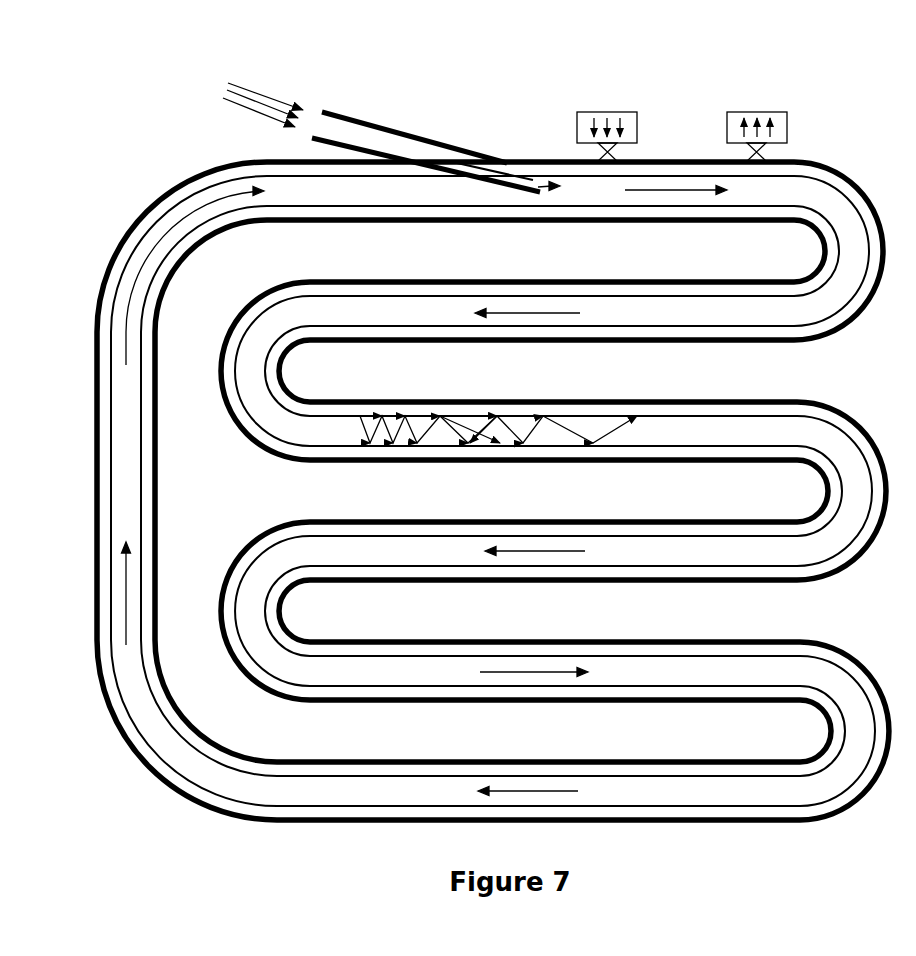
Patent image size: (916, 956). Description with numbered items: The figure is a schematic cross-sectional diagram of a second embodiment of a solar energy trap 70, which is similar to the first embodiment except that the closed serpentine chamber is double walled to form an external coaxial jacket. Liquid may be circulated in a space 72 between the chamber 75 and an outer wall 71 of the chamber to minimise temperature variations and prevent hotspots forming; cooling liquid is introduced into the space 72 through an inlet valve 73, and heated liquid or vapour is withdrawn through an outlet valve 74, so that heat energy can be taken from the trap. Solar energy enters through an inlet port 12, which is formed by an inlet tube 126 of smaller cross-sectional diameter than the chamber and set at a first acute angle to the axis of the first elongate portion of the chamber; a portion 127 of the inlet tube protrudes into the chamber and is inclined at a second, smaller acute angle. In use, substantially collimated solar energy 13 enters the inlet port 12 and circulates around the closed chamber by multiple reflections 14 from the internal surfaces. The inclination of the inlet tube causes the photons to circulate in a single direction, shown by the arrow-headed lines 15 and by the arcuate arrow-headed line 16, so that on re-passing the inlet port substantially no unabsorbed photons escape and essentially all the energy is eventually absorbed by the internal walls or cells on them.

The trap 70 is at (452, 441).
The outer wall 71 is at (92, 407).
The space 72 is at (148, 514).
The chamber 75 is at (118, 498).
The arcuate arrow-headed line 16 is at (138, 282).
The arrow-headed lines 15 is at (667, 195).
The inlet port 12 is at (436, 156).
The inlet tube 126 is at (400, 130).
The portion of the inlet tube 127 is at (518, 192).
The solar energy 13 is at (215, 90).
The reflections 14 is at (383, 415).
The inlet valve 73 is at (605, 108).
The outlet valve 74 is at (757, 108).